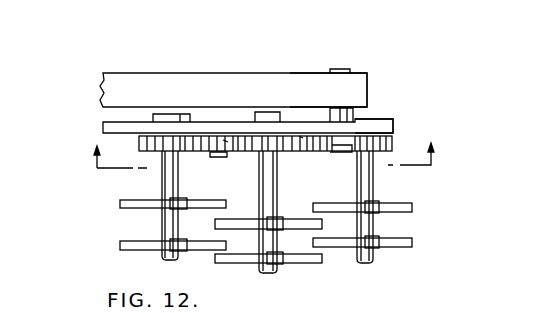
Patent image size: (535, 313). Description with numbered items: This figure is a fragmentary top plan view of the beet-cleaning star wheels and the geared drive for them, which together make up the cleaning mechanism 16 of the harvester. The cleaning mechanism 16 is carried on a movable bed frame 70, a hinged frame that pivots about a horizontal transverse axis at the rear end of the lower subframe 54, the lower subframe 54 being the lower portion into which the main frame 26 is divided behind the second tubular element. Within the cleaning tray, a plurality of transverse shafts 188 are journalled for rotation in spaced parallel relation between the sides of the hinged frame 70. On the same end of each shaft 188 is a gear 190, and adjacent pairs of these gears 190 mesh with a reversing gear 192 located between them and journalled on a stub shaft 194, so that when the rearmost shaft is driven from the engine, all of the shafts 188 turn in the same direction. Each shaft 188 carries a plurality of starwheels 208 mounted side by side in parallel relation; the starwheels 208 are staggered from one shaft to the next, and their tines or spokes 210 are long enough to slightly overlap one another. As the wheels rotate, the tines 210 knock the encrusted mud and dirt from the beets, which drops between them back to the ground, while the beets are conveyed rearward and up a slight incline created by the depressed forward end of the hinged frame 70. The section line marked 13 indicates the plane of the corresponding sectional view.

The section line 13- 13 is at (260, 157).
The cleaning mechanism 16 is at (372, 113).
The frame 26 is at (293, 70).
The lower subframe 54 is at (186, 71).
The movable bed frame 70 is at (103, 128).
The transverse shaft 188 is at (357, 180).
The gear 190 is at (187, 183).
The reversing gear 192 is at (223, 140).
The stub shaft 194 is at (305, 137).
The starwheel 208 is at (237, 229).
The tines 210 is at (216, 252).